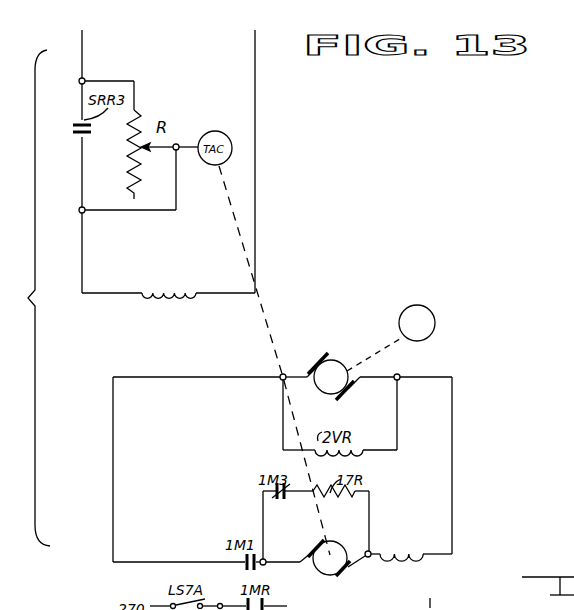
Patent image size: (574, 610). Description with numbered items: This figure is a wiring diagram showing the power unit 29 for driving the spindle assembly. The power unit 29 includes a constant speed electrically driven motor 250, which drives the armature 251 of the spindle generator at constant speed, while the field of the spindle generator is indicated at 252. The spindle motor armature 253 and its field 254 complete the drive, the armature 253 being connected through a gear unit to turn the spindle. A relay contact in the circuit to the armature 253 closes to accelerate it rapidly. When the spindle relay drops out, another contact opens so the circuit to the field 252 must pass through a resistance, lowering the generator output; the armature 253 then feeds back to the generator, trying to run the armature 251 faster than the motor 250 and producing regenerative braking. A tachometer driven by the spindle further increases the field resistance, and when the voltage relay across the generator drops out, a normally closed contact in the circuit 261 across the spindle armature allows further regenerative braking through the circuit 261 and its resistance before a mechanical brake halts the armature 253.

The spindle generator field 252 is at (170, 299).
The constant speed electrically driven motor 250 is at (436, 331).
The armature of the spindle generator 251 is at (345, 374).
The power unit 29 is at (460, 387).
The circuit across the spindle armature 261 is at (369, 531).
The spindle motor armature 253 is at (322, 578).
The spindle motor field 254 is at (405, 561).